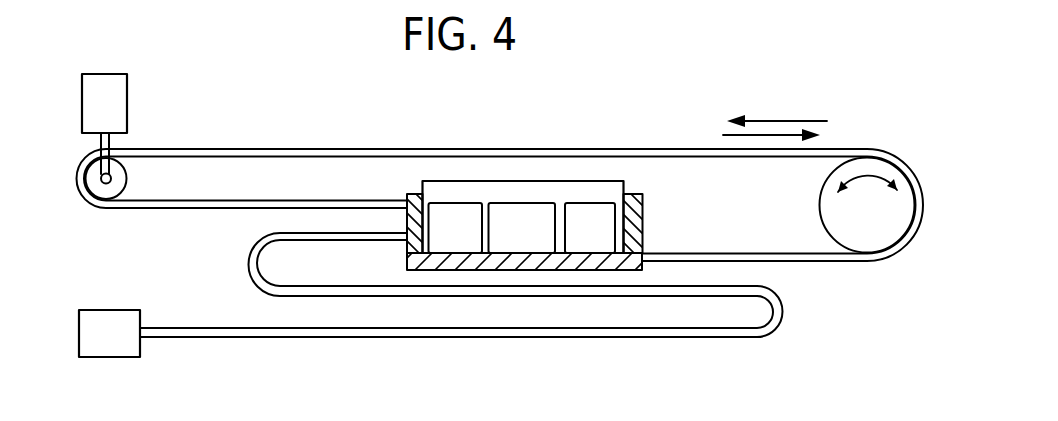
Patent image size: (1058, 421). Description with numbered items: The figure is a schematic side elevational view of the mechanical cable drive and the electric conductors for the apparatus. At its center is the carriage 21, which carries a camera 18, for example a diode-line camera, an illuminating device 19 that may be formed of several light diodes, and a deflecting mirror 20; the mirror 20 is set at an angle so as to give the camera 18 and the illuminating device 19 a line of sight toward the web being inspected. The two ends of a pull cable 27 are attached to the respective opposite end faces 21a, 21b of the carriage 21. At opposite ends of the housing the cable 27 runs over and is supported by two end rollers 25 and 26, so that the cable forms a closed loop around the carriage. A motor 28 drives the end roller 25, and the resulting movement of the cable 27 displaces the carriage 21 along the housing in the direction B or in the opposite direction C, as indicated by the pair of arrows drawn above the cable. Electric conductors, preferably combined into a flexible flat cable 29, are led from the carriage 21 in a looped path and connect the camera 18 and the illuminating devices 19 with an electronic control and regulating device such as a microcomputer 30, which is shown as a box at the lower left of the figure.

The camera 18 is at (517, 215).
The illuminating device 19 is at (447, 213).
The deflecting mirror 20 is at (487, 190).
The carriage 21 is at (508, 239).
The end face of the carriage 21a is at (407, 197).
The end face of the carriage 21b is at (643, 222).
The end roller 25 is at (122, 173).
The end roller 26 is at (876, 243).
The pull cable 27 is at (217, 148).
The motor 28 is at (107, 87).
The flexible flat cable 29 is at (248, 257).
The microcomputer 30 is at (125, 347).
The direction of carriage displacement B is at (727, 134).
The direction of carriage displacement C is at (782, 121).